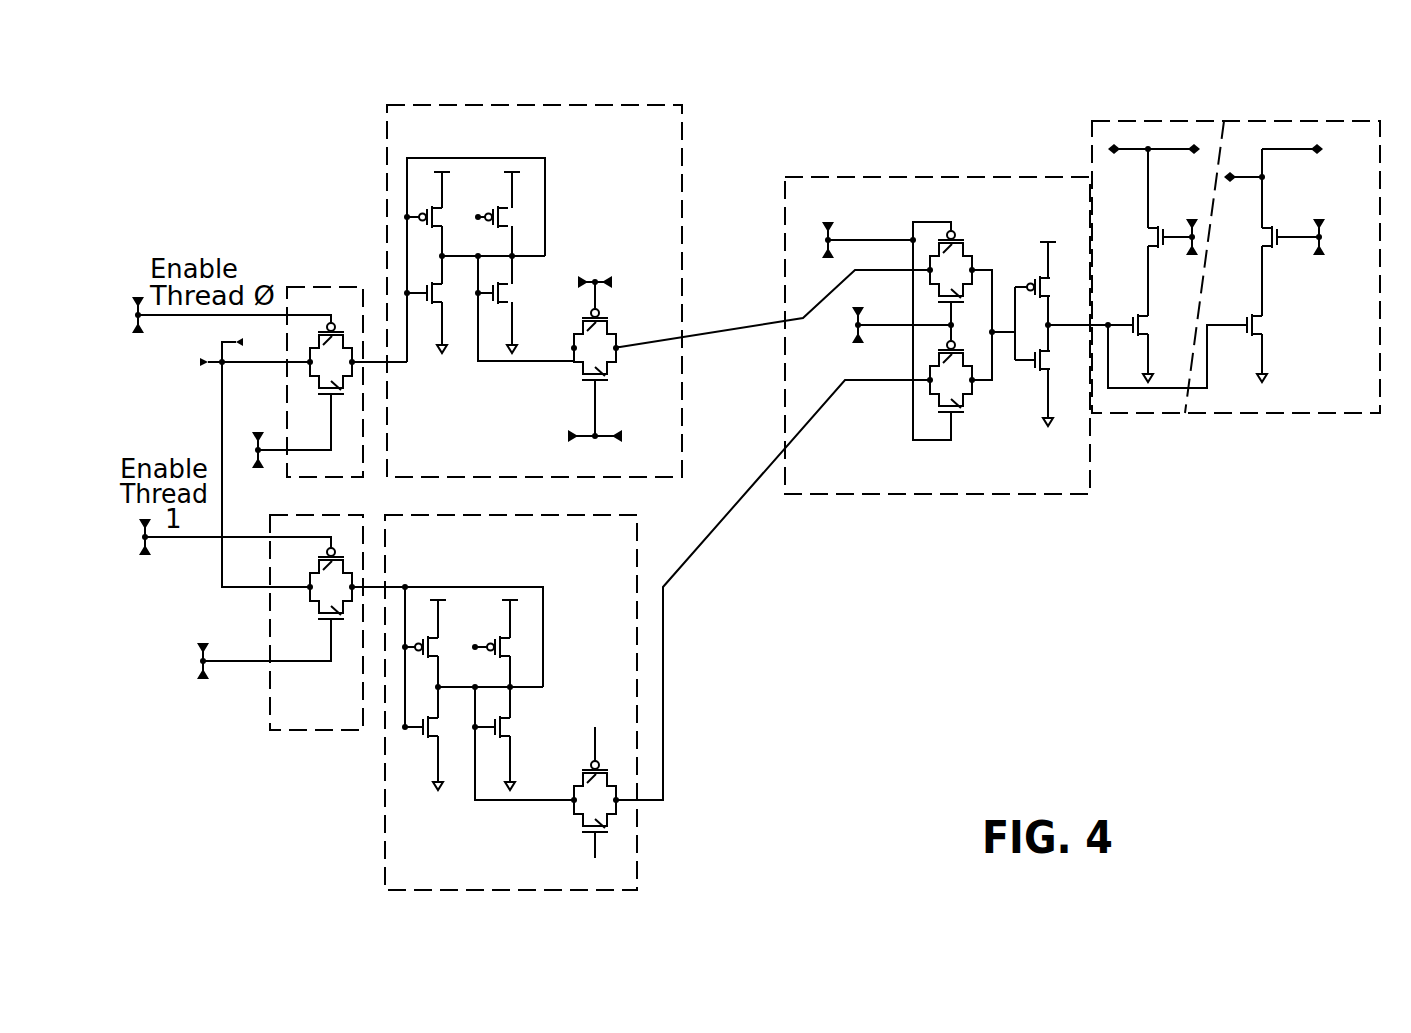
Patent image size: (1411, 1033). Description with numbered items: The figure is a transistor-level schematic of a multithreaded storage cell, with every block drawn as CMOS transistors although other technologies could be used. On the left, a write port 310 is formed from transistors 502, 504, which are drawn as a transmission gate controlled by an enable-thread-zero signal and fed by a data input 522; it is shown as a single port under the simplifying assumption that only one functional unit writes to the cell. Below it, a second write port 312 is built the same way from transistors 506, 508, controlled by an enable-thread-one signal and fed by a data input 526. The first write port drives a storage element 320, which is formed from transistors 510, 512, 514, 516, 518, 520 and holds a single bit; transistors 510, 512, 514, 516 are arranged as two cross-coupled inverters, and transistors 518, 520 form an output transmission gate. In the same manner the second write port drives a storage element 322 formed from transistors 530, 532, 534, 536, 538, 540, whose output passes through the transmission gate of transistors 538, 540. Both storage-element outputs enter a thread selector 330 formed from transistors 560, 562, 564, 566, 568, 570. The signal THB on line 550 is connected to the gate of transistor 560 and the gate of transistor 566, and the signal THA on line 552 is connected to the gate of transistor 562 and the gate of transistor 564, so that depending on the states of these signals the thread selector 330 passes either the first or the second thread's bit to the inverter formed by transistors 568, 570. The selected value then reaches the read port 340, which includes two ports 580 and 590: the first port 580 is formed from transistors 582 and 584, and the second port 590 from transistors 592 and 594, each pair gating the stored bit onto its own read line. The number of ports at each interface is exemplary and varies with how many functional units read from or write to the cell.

The write port 310 is at (293, 287).
The write port 312 is at (272, 732).
The storage element 320 is at (425, 103).
The storage element 322 is at (637, 842).
The thread selector 330 is at (847, 495).
The read port 340 is at (1184, 428).
The transistor 502 is at (322, 340).
The transistor 504 is at (341, 390).
The transistor 506 is at (333, 568).
The transistor 508 is at (332, 611).
The transistor 510 is at (438, 216).
The transistor 512 is at (440, 294).
The transistor 514 is at (508, 217).
The transistor 516 is at (503, 294).
The transistor 518 is at (604, 322).
The transistor 520 is at (605, 376).
The input 522 is at (207, 462).
The input 526 is at (218, 559).
The transistor 530 is at (441, 648).
The transistor 532 is at (430, 731).
The transistor 534 is at (506, 648).
The transistor 536 is at (502, 728).
The transistor 538 is at (590, 782).
The transistor 540 is at (590, 817).
The line 550 is at (853, 240).
The line 552 is at (892, 327).
The transistor 560 is at (959, 248).
The transistor 562 is at (942, 298).
The transistor 564 is at (930, 358).
The transistor 566 is at (961, 408).
The transistor 568 is at (1033, 280).
The transistor 570 is at (1036, 370).
The port 580 is at (1140, 119).
The transistor 582 is at (1155, 226).
The transistor 584 is at (1141, 315).
The port 590 is at (1278, 119).
The transistor 592 is at (1276, 226).
The transistor 594 is at (1263, 322).